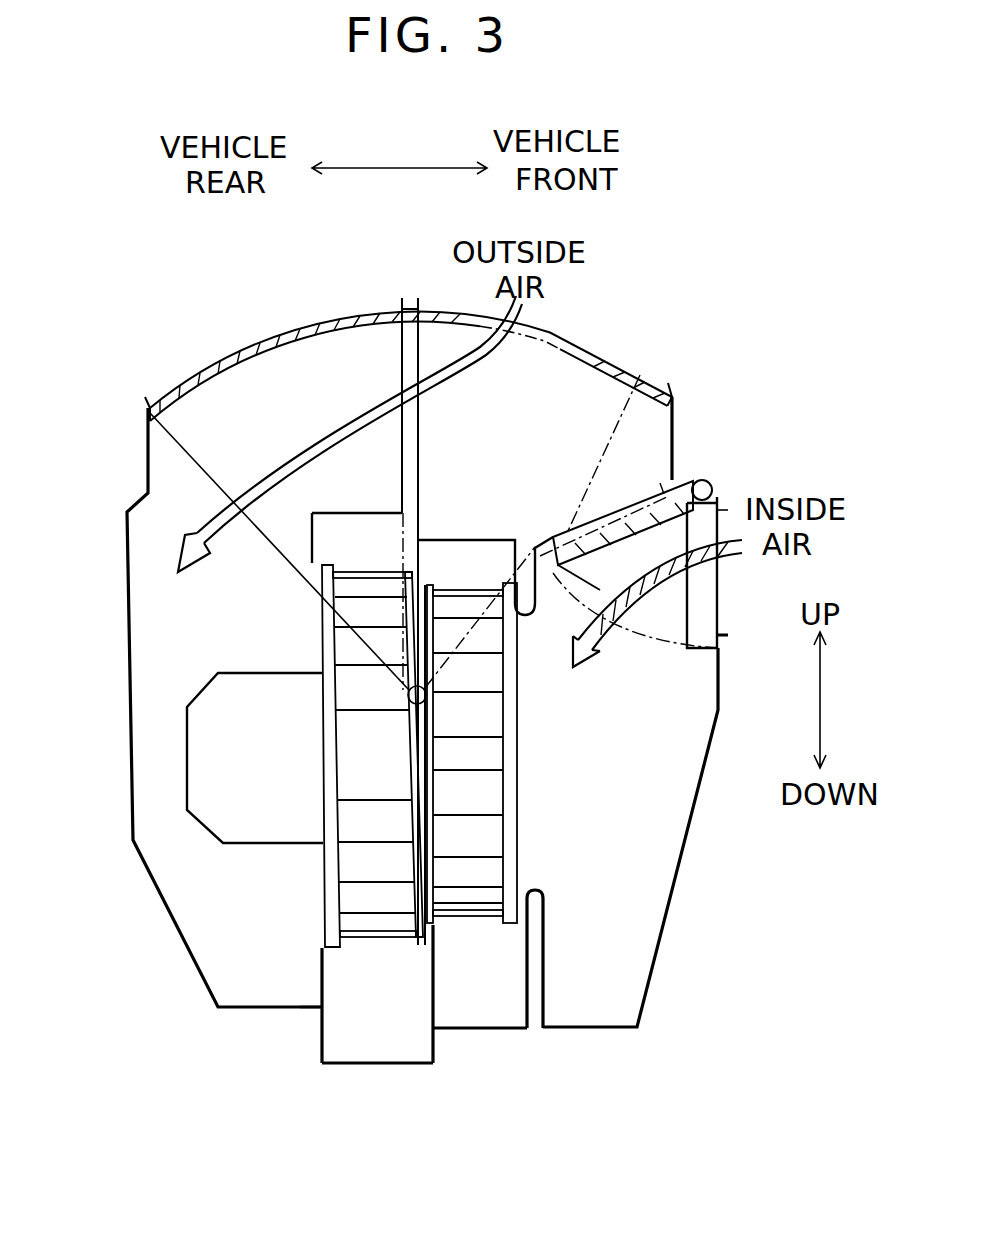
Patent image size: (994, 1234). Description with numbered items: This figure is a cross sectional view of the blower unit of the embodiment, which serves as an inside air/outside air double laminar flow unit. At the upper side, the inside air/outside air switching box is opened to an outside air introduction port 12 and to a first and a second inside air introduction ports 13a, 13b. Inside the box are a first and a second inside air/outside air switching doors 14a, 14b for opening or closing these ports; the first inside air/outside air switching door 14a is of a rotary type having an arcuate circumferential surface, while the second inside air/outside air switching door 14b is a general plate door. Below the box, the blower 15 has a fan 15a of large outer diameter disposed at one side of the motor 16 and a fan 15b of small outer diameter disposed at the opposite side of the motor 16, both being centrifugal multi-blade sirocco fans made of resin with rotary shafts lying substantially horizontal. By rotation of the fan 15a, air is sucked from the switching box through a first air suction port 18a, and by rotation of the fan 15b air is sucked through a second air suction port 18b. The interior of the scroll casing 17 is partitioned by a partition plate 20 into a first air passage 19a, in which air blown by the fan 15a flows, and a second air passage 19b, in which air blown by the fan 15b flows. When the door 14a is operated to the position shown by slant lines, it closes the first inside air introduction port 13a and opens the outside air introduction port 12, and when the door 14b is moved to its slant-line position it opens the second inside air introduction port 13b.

The outside air introduction port 12 is at (557, 331).
The first inside air introduction port 13a is at (233, 348).
The second inside air introduction port 13b is at (723, 575).
The first inside air/outside air switching door 14a is at (328, 320).
The second inside air/outside air switching door 14b is at (673, 500).
The blower 15 is at (301, 896).
The fan 15a is at (357, 895).
The fan 15b is at (500, 800).
The motor 16 is at (218, 808).
The scroll casing 17 is at (352, 1065).
The first air suction port 18a is at (313, 610).
The second air suction port 18b is at (540, 770).
The first air passage 19a is at (383, 1033).
The second air passage 19b is at (488, 1003).
The partition plate 20 is at (423, 560).